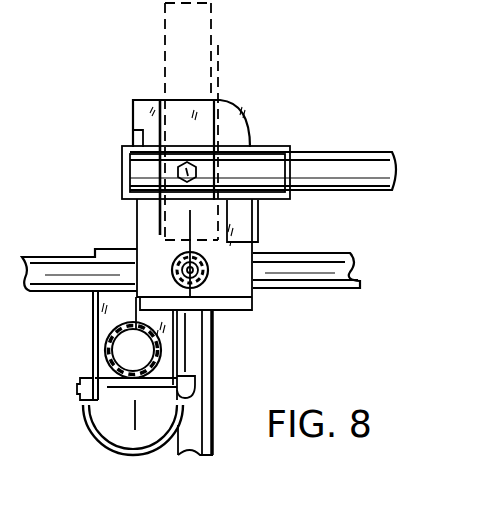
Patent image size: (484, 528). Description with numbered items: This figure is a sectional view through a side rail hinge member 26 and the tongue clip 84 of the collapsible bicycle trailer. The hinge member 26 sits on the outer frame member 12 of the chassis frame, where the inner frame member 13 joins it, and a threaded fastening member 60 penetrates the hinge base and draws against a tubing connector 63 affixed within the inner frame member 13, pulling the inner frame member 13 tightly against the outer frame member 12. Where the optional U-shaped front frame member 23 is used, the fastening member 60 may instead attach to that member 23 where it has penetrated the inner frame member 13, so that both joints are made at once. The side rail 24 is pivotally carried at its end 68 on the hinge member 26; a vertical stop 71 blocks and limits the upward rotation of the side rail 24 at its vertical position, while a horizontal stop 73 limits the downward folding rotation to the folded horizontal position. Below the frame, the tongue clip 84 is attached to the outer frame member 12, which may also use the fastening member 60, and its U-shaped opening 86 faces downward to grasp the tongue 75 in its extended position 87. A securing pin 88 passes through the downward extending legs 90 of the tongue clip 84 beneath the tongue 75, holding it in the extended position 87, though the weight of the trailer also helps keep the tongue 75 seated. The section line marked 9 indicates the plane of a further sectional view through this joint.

The side rail hinge member 26 is at (250, 105).
The vertical stop 71 is at (143, 104).
The horizontal stop 73 is at (133, 129).
The end of side rail 68 is at (122, 164).
The side rail 24 is at (340, 163).
The section line 9- 9 is at (168, 223).
The threaded fastening member 60 is at (197, 276).
The inner frame member 13 is at (184, 258).
The tubing connector 63 is at (182, 274).
The outer frame member 12 is at (318, 280).
The tongue clip 84 is at (103, 313).
The tongue 75 is at (133, 363).
The U-shaped front frame member 23 is at (213, 341).
The extended position 87 is at (84, 360).
The downward extending legs 90 is at (80, 392).
The securing pin 88 is at (192, 380).
The U-shaped opening 86 is at (148, 395).